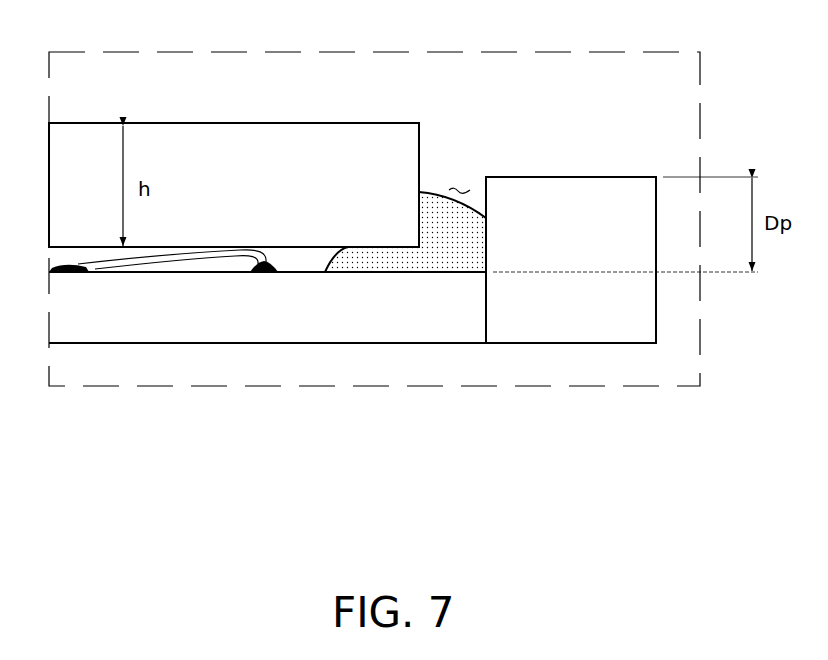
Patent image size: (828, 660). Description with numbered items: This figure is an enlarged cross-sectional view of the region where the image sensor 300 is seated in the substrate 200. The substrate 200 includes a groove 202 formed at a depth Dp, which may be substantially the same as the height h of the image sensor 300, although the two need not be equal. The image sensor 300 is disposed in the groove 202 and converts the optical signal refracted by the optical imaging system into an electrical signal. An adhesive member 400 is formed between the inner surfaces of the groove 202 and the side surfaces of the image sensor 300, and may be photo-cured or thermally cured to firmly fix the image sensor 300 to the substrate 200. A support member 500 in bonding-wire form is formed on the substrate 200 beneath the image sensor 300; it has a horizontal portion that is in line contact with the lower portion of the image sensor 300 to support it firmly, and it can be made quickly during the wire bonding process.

The substrate 200 is at (581, 195).
The groove 202 is at (462, 185).
The image sensor 300 is at (361, 142).
The adhesive member 400 is at (442, 262).
The support member 500 is at (168, 262).